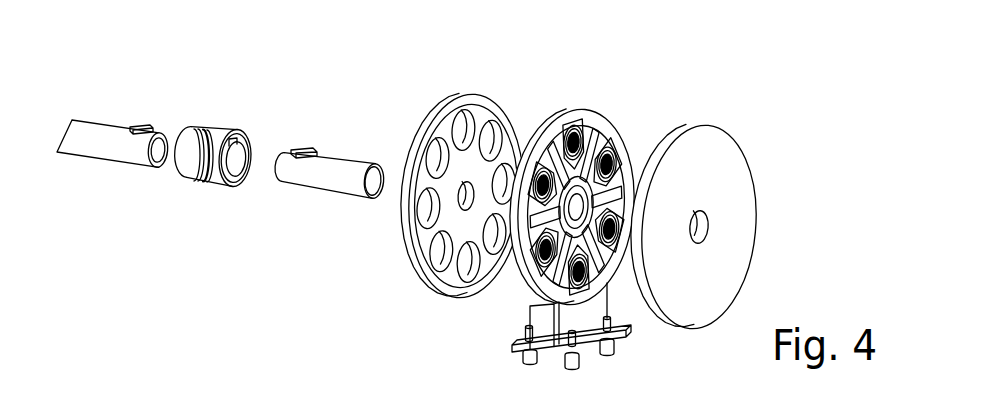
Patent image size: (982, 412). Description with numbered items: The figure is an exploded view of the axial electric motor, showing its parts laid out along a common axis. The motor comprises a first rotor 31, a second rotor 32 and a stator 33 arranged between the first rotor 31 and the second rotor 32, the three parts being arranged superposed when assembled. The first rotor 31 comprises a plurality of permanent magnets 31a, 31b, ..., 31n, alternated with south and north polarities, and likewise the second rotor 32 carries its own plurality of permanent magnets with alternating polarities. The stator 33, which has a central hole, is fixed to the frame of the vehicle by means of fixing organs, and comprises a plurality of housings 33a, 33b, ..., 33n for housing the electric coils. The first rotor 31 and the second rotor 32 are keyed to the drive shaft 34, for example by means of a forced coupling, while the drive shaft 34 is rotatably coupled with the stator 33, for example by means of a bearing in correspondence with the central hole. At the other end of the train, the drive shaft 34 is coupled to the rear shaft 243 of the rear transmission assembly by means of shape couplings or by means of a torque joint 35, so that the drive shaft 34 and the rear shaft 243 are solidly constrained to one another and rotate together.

The rear shaft 243 is at (120, 150).
The torque joint 35 is at (212, 178).
The drive shaft 34 is at (335, 187).
The first rotor 31 is at (476, 180).
The permanent magnet 31a is at (497, 115).
The permanent magnet 31b is at (463, 128).
The permanent magnet 31n is at (472, 271).
The stator 33 is at (605, 201).
The housing 33a is at (613, 160).
The housing 33b is at (572, 118).
The housing 33n is at (627, 277).
The second rotor 32 is at (738, 160).